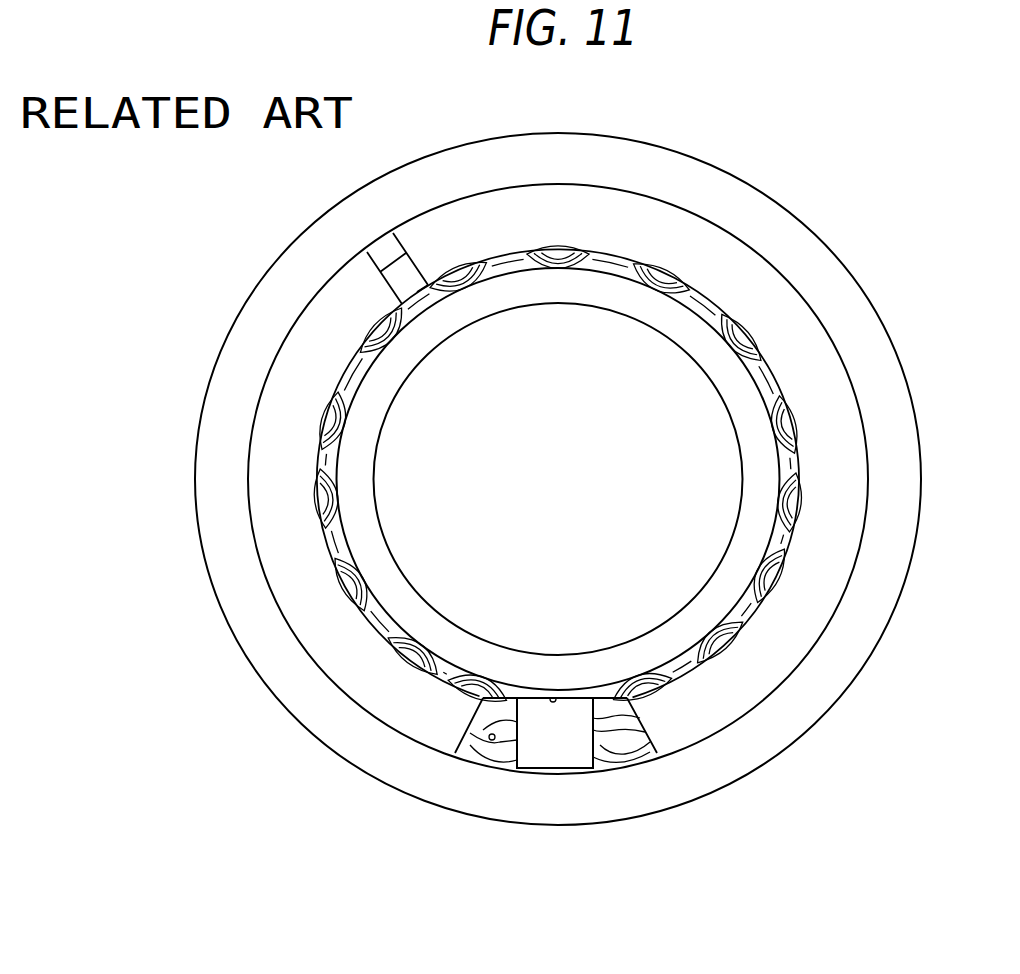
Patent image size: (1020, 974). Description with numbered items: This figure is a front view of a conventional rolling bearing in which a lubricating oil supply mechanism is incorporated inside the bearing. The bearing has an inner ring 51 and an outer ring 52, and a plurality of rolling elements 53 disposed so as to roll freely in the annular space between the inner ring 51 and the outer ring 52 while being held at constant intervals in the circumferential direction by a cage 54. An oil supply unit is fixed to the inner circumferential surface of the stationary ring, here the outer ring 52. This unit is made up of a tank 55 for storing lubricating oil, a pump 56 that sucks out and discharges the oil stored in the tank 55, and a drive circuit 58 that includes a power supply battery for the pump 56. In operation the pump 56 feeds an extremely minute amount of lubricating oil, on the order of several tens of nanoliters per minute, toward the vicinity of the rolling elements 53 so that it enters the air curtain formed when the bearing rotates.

The inner ring 51 is at (755, 506).
The outer ring 52 is at (812, 690).
The rolling elements 53 is at (727, 337).
The cage 54 is at (623, 743).
The tank 55 is at (730, 267).
The pump 56 is at (555, 760).
The drive circuit 58 is at (380, 693).